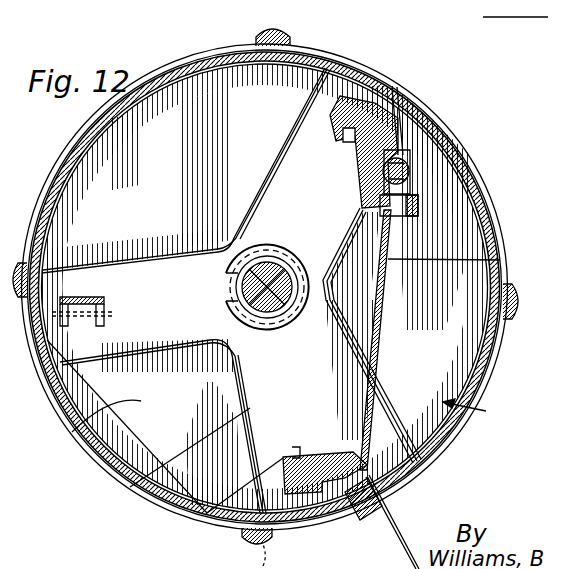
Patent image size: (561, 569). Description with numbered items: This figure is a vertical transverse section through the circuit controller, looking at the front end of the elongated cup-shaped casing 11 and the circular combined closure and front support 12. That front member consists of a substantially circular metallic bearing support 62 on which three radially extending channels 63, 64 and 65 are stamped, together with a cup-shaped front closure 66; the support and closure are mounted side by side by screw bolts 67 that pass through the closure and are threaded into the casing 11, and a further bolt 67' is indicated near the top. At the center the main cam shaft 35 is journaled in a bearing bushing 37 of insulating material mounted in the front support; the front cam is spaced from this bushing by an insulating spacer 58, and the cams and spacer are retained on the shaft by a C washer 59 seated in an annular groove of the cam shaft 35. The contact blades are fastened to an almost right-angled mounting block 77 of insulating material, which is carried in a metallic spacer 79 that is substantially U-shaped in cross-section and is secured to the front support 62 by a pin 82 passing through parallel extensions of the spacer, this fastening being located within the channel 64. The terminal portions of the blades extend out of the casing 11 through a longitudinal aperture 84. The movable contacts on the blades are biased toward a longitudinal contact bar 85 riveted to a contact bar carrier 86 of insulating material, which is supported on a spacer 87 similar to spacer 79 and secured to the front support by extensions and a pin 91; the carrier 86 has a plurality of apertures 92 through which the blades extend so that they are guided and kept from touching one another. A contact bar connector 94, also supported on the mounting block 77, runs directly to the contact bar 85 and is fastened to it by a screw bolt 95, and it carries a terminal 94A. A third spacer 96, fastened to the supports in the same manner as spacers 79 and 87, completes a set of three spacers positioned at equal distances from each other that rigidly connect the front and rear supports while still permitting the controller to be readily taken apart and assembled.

The casing 11 is at (491, 228).
The combined closure and front support 12 is at (476, 410).
The main cam shaft 35 is at (300, 288).
The bearing bushing 37 is at (235, 288).
The insulating spacer 58 is at (300, 300).
The C washer 59 is at (303, 310).
The bearing support 62 is at (88, 421).
The channel 63 is at (283, 166).
The channel 64 is at (173, 455).
The channel 65 is at (144, 277).
The front closure 66 is at (214, 58).
The screw bolt 67 is at (272, 285).
The rim lug 67' is at (503, 16).
The mounting block 77 is at (333, 500).
The spacer 79 is at (127, 444).
The pin 82 is at (250, 555).
The longitudinal aperture 84 is at (349, 513).
The contact bar 85 is at (394, 149).
The contact bar carrier 86 is at (340, 173).
The spacer 87 is at (322, 108).
The pin 91 is at (353, 82).
The aperture 92 is at (419, 205).
The contact bar connector 94 is at (501, 286).
The terminal 94A is at (402, 512).
The screw bolt 95 is at (411, 172).
The spacer 96 is at (104, 300).